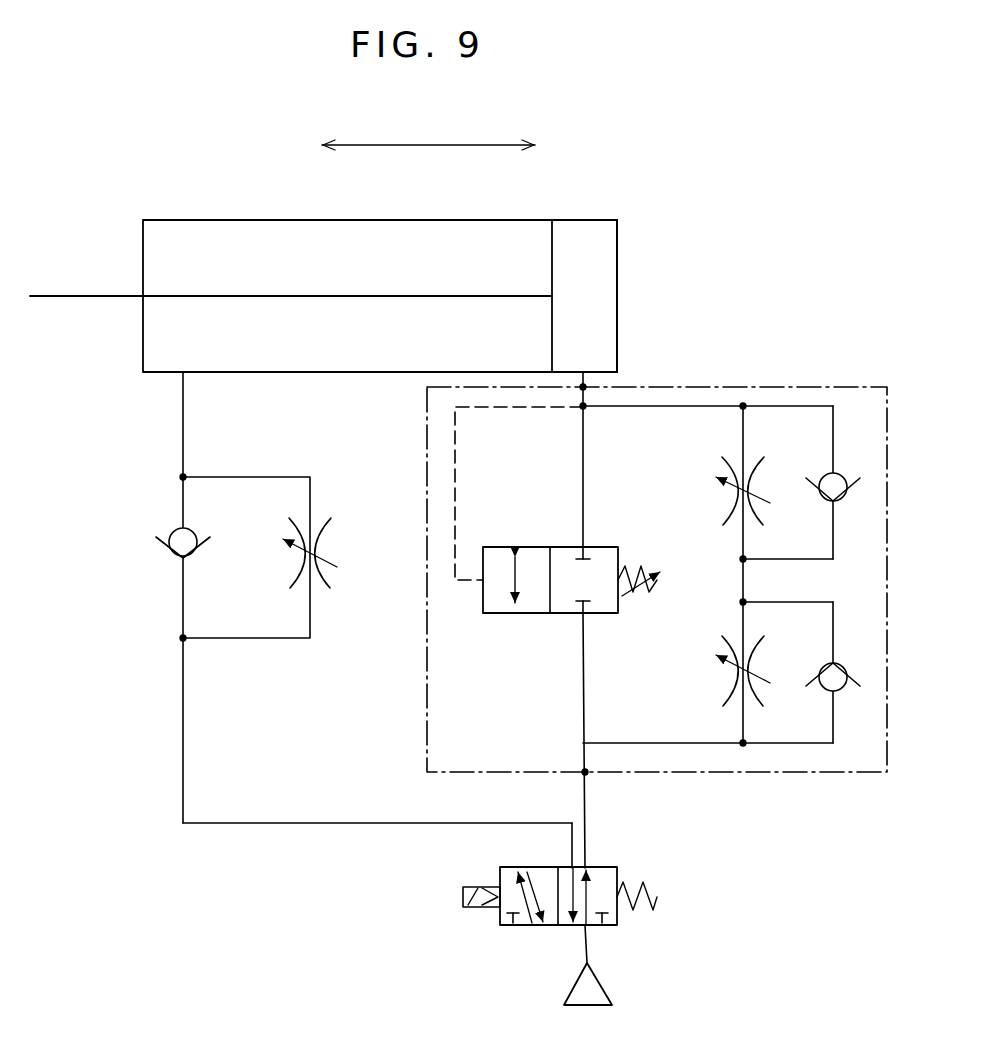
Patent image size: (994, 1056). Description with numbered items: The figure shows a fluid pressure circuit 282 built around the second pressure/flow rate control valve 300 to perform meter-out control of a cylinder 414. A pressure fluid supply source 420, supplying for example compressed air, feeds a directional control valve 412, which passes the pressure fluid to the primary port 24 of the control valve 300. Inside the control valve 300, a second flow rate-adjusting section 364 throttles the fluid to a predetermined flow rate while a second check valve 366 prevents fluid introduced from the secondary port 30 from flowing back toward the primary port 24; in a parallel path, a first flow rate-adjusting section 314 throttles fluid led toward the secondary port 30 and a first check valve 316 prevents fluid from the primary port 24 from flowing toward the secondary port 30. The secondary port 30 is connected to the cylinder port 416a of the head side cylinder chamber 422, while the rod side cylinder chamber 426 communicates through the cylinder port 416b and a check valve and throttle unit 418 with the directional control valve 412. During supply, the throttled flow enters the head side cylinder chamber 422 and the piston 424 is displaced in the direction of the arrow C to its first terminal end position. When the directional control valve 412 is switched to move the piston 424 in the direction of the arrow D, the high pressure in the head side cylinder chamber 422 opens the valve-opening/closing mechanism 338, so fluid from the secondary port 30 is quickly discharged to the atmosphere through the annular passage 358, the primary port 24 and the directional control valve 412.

The hydraulic drive system 282 is at (724, 135).
The cylinder 414 is at (370, 221).
The piston 424 is at (552, 250).
The rod side cylinder chamber 426 is at (332, 278).
The head side cylinder chamber 422 is at (603, 302).
The first port 416a is at (584, 372).
The second port 416b is at (183, 380).
The secondary port 30 is at (584, 392).
The second pressure/flow rate control valve 300 is at (788, 385).
The annular passage 358 is at (540, 487).
The valve-opening/closing mechanism 338 is at (592, 547).
The second flow rate-adjusting section 364 is at (718, 493).
The second check valve 366 is at (826, 474).
The first flow rate-adjusting section 314 is at (720, 678).
The first check valve 316 is at (829, 686).
The check valve and throttle branch 418 is at (150, 603).
The primary port 24 is at (586, 774).
The directional control valve 412 is at (607, 860).
The pressure fluid supply source 420 is at (605, 985).